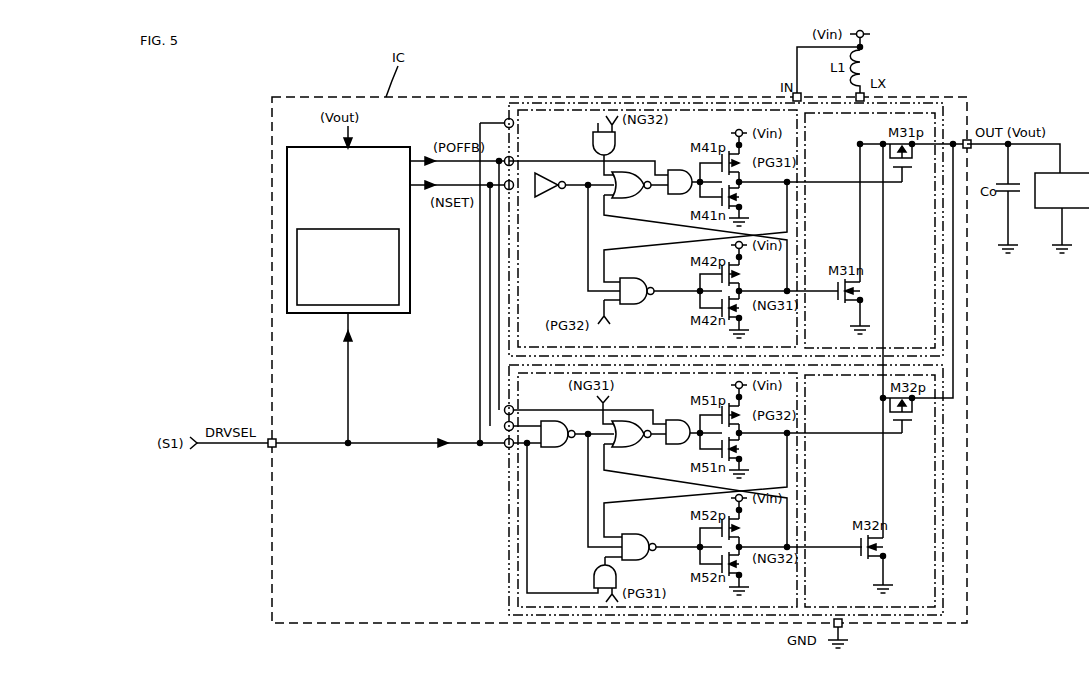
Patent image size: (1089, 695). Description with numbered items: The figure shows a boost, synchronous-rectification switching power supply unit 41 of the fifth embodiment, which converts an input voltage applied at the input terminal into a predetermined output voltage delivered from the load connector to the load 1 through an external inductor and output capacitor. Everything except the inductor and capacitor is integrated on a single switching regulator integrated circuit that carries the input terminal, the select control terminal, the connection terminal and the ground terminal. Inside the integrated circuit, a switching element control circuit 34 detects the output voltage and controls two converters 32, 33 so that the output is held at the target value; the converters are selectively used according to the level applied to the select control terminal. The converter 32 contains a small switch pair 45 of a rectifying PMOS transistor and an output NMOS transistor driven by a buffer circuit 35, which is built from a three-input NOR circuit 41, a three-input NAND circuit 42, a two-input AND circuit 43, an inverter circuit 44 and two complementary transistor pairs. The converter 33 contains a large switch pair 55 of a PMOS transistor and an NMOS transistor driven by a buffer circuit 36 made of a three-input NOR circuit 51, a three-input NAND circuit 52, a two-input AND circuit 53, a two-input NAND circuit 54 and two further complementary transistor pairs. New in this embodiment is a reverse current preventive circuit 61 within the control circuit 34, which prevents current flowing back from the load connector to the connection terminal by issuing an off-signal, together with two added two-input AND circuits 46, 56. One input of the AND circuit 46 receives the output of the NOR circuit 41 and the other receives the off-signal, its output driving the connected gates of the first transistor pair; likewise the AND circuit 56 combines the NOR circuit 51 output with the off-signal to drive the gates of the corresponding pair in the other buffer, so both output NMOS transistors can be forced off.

The load 1 is at (1072, 208).
The converter 32 is at (505, 120).
The converter 33 is at (506, 490).
The switching element control circuit 34 is at (391, 147).
The buffer circuit 35 is at (725, 106).
The buffer circuit 36 is at (700, 612).
The NOR circuit 41 is at (632, 199).
The NAND circuit 42 is at (634, 304).
The AND circuit 43 is at (592, 145).
The inverter circuit 44 is at (545, 197).
The switch pair 45 is at (910, 110).
The AND circuit 46 is at (673, 170).
The NOR circuit 51 is at (635, 447).
The NAND circuit 52 is at (640, 534).
The AND circuit 53 is at (593, 578).
The NAND circuit 54 is at (553, 448).
The switch pair 55 is at (912, 613).
The AND circuit 56 is at (671, 420).
The reverse current preventive circuit 61 is at (328, 313).